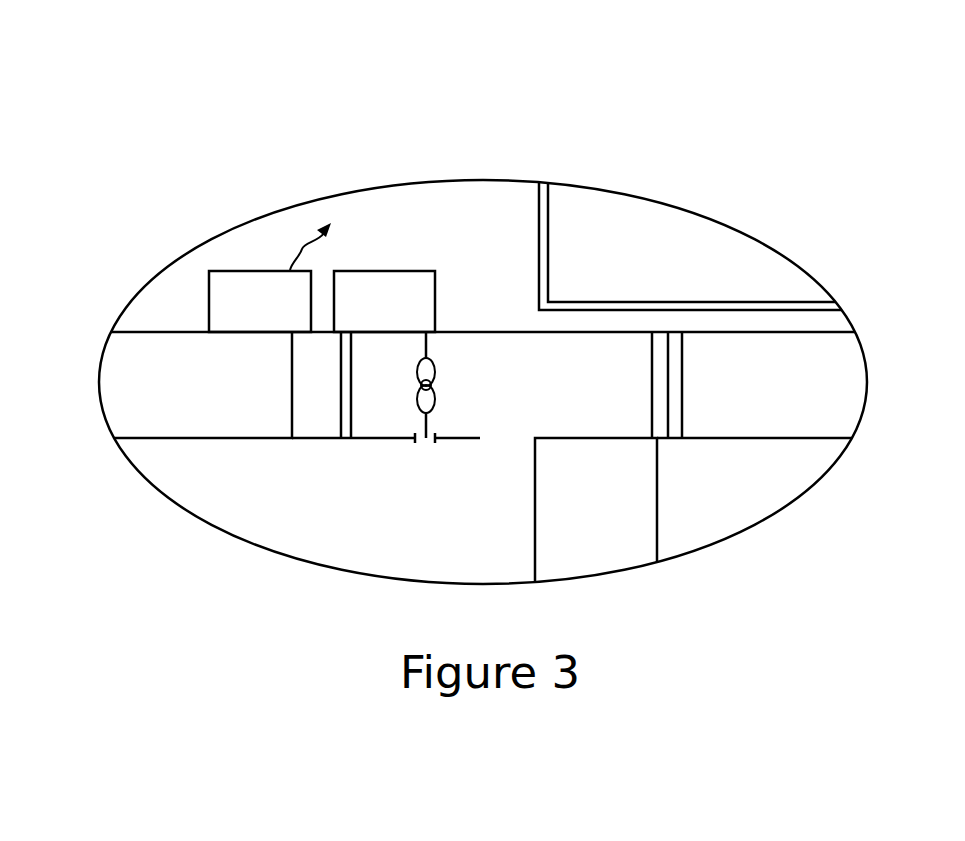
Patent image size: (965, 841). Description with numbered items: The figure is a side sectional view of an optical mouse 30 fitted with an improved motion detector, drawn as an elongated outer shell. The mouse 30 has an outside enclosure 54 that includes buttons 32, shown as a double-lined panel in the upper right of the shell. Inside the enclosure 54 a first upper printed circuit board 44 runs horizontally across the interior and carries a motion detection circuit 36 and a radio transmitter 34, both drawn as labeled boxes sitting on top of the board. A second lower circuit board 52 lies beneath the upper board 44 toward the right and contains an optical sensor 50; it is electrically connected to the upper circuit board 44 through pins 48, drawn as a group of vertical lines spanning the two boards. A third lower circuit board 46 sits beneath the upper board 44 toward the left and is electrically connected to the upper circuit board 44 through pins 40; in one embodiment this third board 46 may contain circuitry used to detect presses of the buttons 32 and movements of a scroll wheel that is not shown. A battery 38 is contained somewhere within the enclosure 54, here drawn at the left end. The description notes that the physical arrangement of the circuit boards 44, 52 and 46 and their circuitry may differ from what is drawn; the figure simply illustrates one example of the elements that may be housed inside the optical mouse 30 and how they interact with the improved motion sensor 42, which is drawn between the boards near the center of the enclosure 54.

The mouse 30 is at (906, 80).
The buttons 32 is at (668, 206).
The radio transmitter 34 is at (238, 271).
The Motion Detection Circuit (MDC) 36 is at (378, 271).
The battery 38 is at (110, 390).
The pins 40 is at (341, 405).
The motion sensor 42 is at (470, 380).
The first upper printed circuit board 44 is at (513, 331).
The third lower circuit board 46 is at (366, 438).
The pins 48 is at (675, 368).
The optical sensor 50 is at (645, 468).
The second lower circuit board 52 is at (752, 438).
The outside enclosure 54 is at (478, 181).